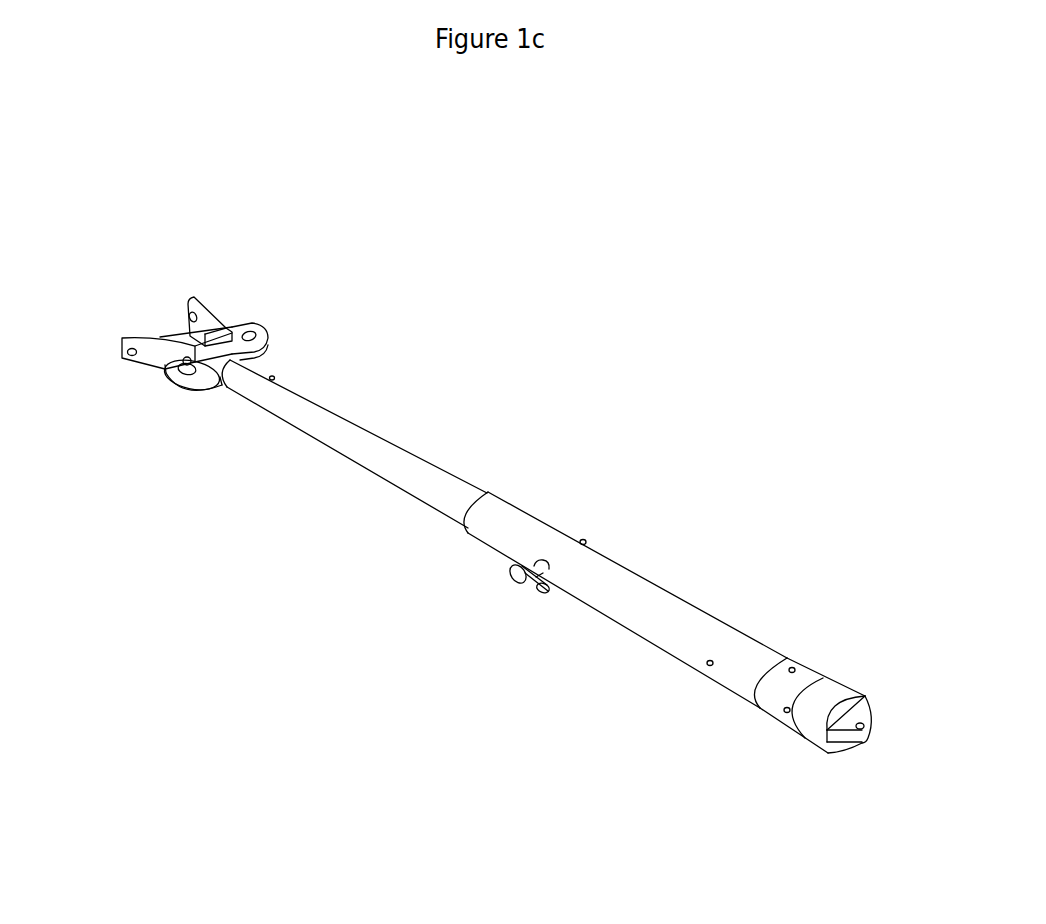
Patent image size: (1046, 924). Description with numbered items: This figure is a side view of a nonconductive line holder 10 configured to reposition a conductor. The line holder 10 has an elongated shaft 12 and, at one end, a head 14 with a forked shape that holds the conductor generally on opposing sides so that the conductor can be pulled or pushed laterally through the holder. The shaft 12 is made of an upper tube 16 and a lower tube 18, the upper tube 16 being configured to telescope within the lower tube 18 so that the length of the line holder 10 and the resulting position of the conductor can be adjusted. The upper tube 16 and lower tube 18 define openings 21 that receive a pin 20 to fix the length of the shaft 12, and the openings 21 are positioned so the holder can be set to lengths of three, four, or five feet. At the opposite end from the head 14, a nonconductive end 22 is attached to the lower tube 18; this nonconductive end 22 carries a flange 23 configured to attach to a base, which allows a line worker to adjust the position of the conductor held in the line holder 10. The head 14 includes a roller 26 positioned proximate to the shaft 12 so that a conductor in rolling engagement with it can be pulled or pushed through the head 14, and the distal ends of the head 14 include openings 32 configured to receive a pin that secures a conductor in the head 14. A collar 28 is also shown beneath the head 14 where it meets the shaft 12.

The nonconductive line holder 10 is at (635, 342).
The shaft 12 is at (552, 478).
The head 14 is at (205, 308).
The upper tube 16 is at (330, 428).
The lower tube 18 is at (613, 573).
The pin 20 is at (522, 580).
The openings 21 is at (708, 668).
The nonconductive end 22 is at (838, 695).
The flange 23 is at (865, 717).
The roller 26 is at (215, 345).
The collar 28 is at (183, 363).
The openings 32 is at (193, 317).